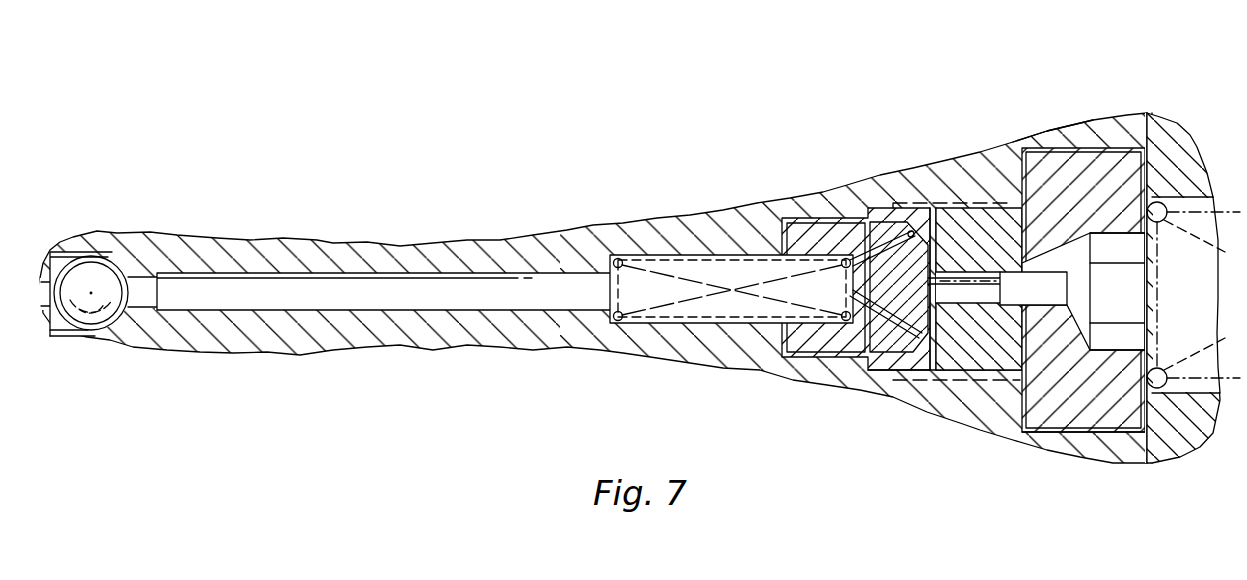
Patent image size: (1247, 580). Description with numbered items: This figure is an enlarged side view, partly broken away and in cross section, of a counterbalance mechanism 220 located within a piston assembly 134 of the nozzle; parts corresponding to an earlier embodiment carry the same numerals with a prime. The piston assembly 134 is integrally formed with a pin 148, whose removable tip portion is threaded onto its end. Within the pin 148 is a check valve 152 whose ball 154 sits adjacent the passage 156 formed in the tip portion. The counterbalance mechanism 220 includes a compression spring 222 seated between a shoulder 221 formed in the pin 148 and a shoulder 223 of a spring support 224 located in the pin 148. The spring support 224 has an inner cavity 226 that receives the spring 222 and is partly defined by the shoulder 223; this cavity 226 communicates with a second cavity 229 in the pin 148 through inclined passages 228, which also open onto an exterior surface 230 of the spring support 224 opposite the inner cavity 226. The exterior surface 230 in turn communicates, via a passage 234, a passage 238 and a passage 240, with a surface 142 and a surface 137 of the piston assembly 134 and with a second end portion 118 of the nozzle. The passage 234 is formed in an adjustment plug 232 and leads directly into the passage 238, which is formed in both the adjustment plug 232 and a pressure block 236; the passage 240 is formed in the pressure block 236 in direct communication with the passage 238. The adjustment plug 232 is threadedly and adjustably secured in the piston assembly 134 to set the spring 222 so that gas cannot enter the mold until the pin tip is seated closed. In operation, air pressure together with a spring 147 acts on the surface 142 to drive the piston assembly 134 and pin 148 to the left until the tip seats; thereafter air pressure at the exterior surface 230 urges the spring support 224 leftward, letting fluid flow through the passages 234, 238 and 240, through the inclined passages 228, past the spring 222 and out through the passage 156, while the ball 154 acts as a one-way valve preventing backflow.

The second end portion 118 is at (1166, 122).
The piston assembly 134 is at (1027, 132).
The surface 137 is at (1188, 150).
The surface 142 is at (1152, 114).
The spring 147 is at (1161, 390).
The pin 148 is at (323, 247).
The check valve 152 is at (58, 243).
The ball 154 is at (102, 268).
The passage 156 is at (42, 308).
The counterbalance mechanism 220 is at (1000, 152).
The shoulder 221 is at (605, 263).
The compression spring 222 is at (648, 260).
The shoulder 223 is at (878, 240).
The spring support 224 is at (815, 223).
The inner cavity 226 is at (815, 335).
The inclined passages 228 is at (916, 240).
The second cavity 229 is at (905, 362).
The exterior surface 230 is at (933, 330).
The adjustment plug 232 is at (983, 368).
The passage 234 is at (1001, 375).
The pressure block 236 is at (1080, 440).
The passage 238 is at (1028, 342).
The passage 240 is at (1118, 345).